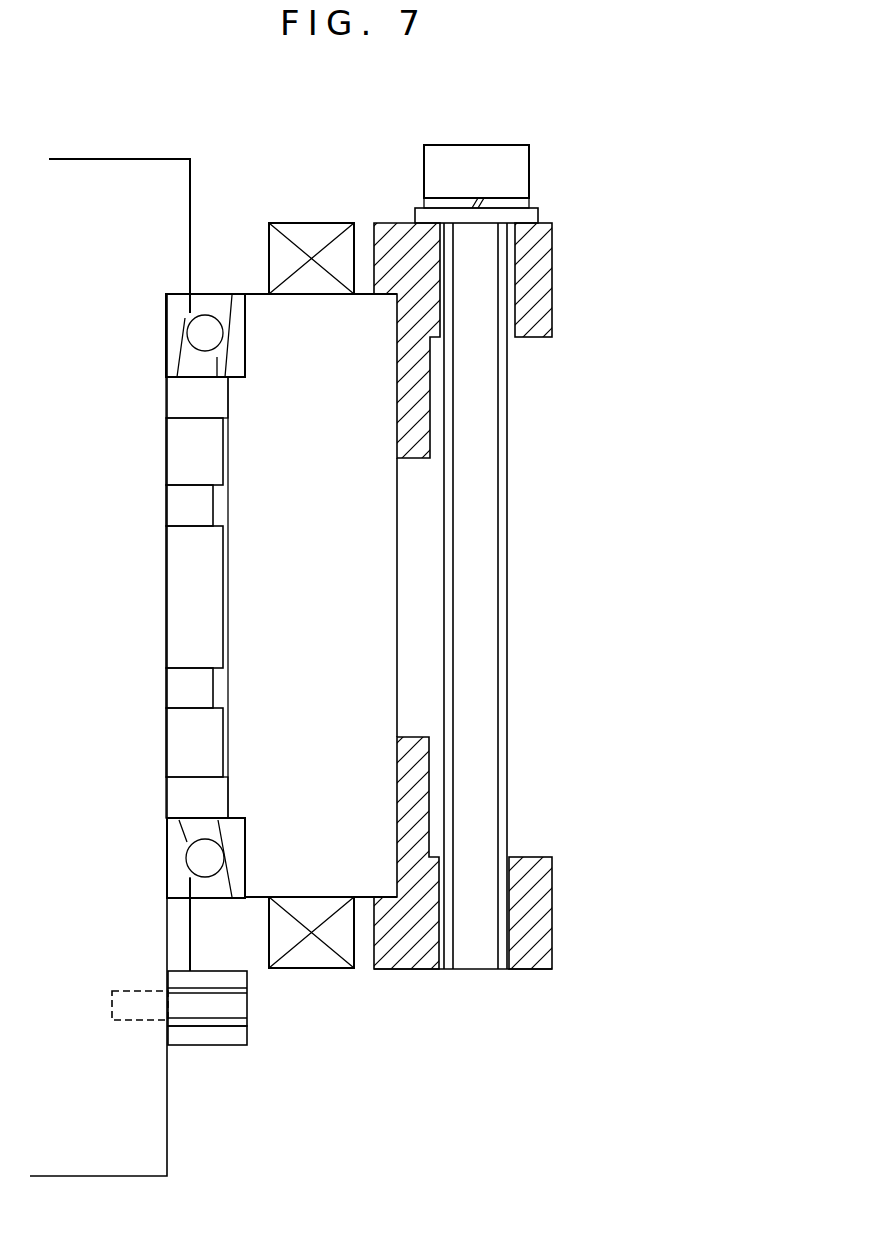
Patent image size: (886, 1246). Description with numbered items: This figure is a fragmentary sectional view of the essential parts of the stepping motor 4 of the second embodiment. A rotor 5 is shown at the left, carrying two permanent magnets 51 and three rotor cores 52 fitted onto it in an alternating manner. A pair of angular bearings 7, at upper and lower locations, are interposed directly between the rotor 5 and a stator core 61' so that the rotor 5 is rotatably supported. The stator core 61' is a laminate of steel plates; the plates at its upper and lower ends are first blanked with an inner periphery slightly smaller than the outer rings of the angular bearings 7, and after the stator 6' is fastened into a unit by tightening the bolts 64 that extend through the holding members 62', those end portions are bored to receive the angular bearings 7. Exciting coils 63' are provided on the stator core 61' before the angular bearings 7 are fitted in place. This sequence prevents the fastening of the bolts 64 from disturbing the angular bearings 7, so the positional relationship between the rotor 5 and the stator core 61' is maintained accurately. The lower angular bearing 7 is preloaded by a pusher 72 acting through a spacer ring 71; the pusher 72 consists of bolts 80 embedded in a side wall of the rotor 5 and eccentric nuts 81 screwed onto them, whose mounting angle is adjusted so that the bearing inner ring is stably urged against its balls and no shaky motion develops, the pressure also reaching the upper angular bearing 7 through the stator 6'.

The stepping motor 4 is at (631, 221).
The rotor 5 is at (123, 172).
The stator 6' is at (428, 596).
The angular bearing 7 is at (168, 325).
The permanent magnet 51 is at (172, 505).
The rotor core 52 is at (170, 450).
The stator core 61' is at (408, 596).
The holding member 62' is at (560, 596).
The exciting coil 63' is at (311, 595).
The bolt 64 is at (535, 168).
The spacer ring 71 is at (170, 926).
The pusher 72 is at (232, 1039).
The bolt 80 is at (238, 1004).
The nut 81 is at (198, 1043).